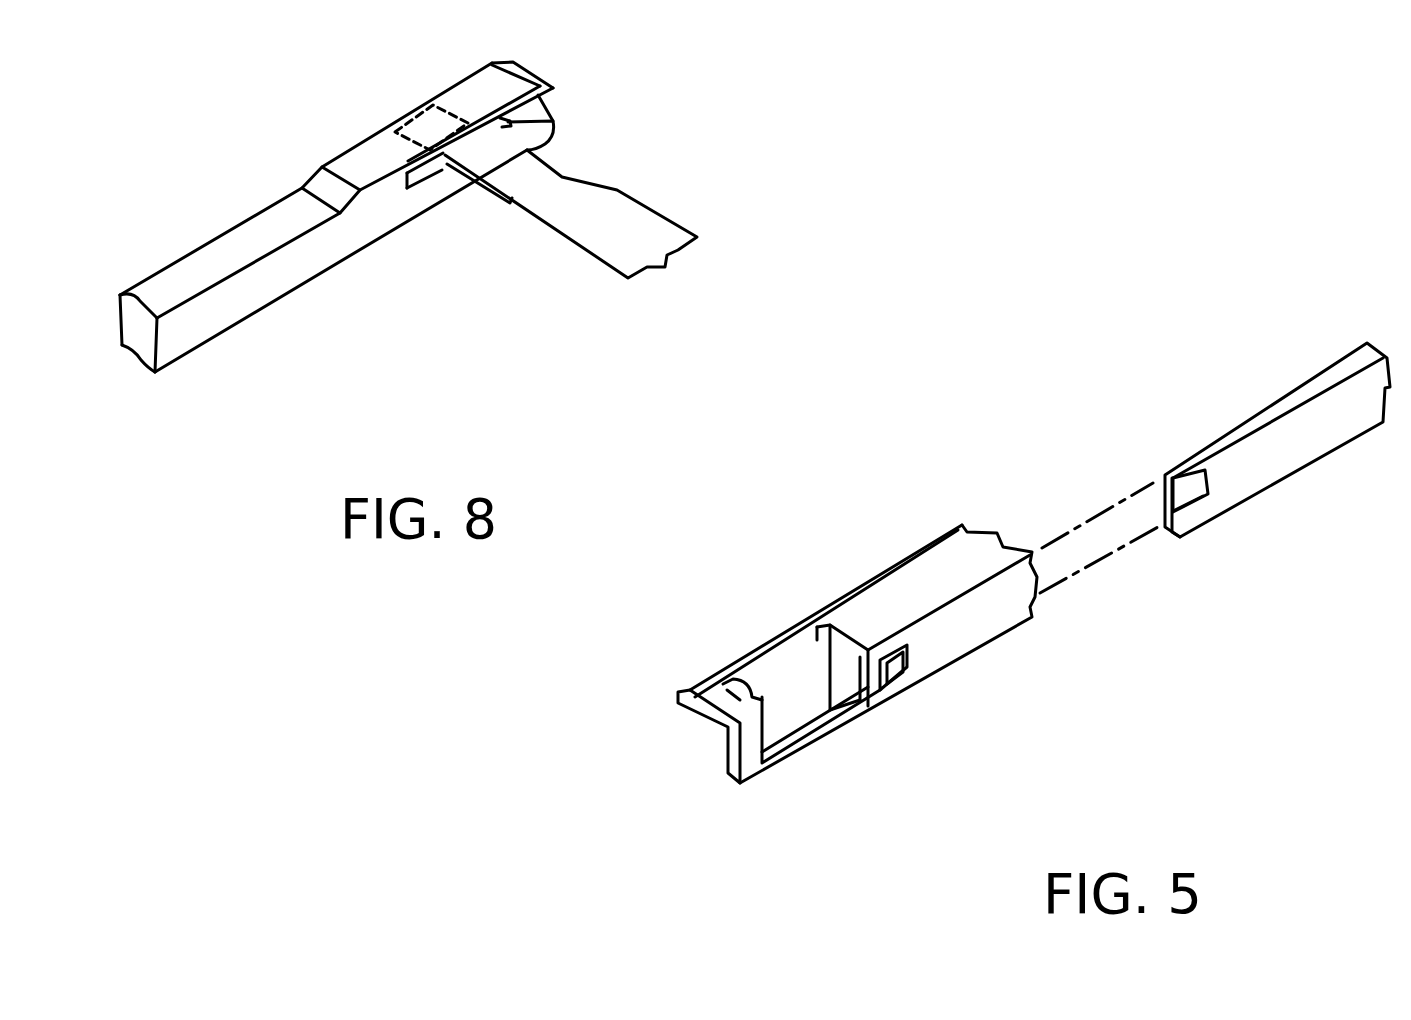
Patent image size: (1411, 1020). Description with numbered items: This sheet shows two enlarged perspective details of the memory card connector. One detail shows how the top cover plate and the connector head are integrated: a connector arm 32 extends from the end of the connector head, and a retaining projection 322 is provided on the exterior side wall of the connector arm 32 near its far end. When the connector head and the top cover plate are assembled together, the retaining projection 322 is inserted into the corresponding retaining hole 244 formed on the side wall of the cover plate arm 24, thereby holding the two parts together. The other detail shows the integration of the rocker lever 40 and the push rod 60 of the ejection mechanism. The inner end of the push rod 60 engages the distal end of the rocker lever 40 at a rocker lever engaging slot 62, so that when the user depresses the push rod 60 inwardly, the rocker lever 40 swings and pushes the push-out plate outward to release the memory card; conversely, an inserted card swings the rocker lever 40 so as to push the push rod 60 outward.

In FIG. 8, the push rod 60 is at (275, 285).
In FIG. 8, the rocker lever engaging slot 62 is at (420, 183).
In FIG. 8, the rocker lever 40 is at (625, 220).
In FIG. 5, the cover plate arm 24 is at (920, 575).
In FIG. 5, the retaining hole 244 is at (903, 673).
In FIG. 5, the connector arm 32 is at (1330, 432).
In FIG. 5, the retaining projection 322 is at (1193, 492).